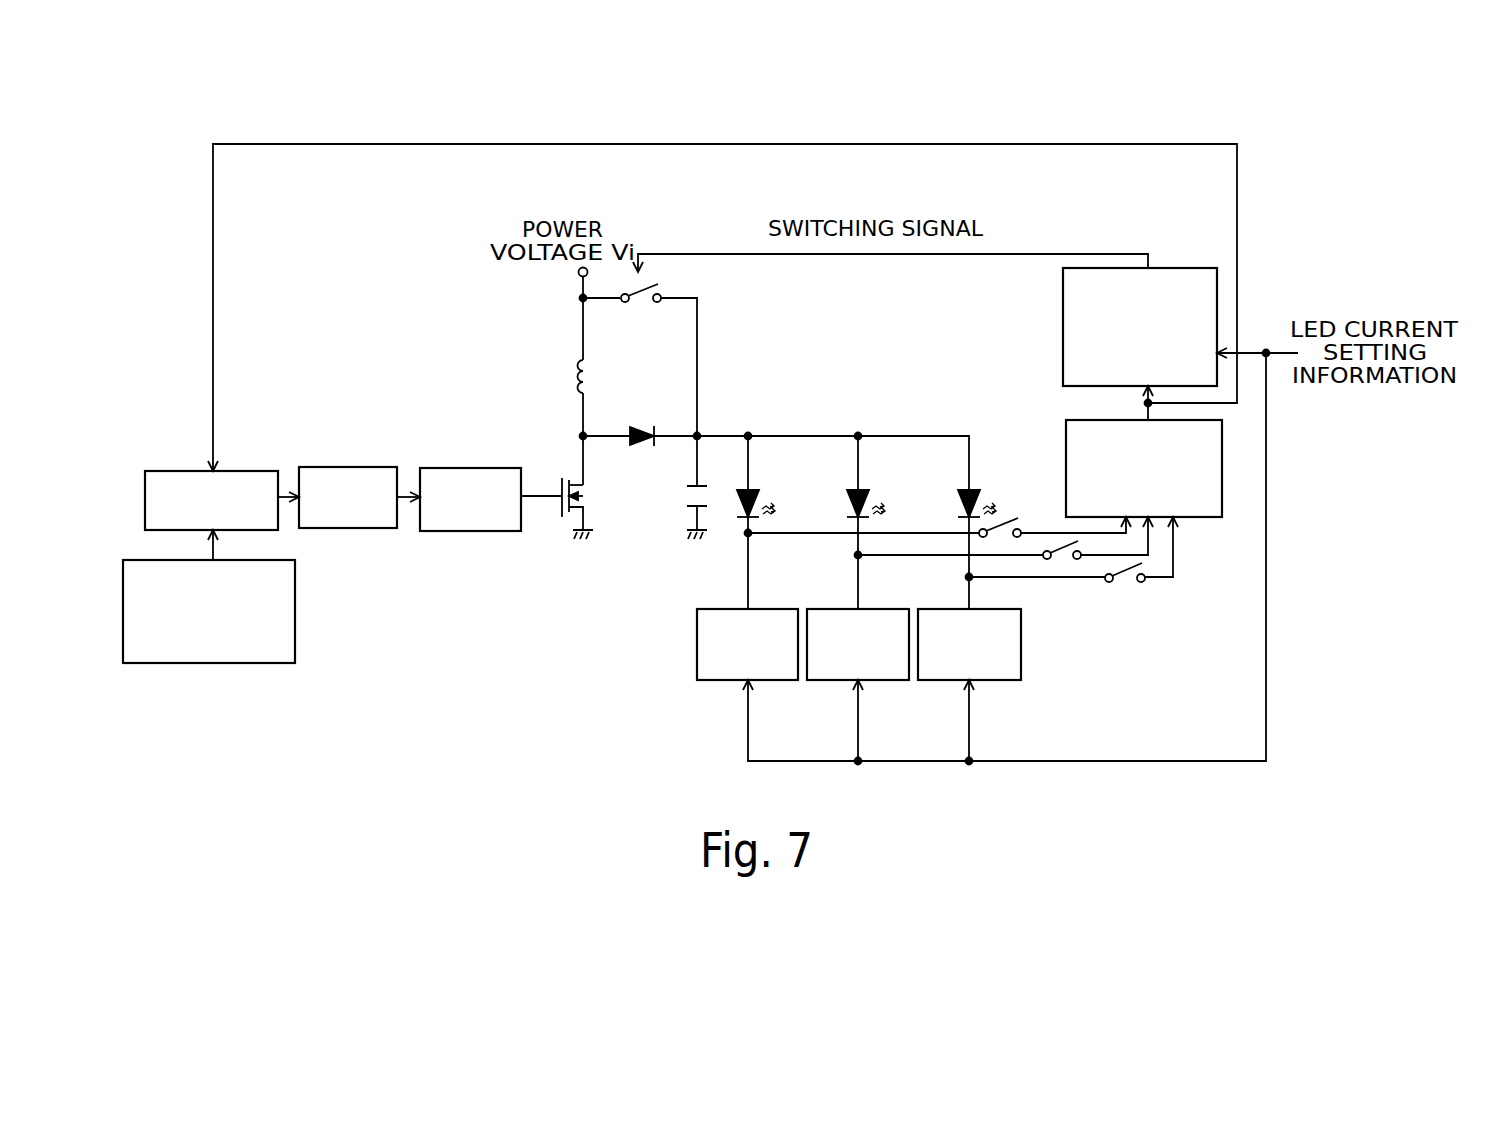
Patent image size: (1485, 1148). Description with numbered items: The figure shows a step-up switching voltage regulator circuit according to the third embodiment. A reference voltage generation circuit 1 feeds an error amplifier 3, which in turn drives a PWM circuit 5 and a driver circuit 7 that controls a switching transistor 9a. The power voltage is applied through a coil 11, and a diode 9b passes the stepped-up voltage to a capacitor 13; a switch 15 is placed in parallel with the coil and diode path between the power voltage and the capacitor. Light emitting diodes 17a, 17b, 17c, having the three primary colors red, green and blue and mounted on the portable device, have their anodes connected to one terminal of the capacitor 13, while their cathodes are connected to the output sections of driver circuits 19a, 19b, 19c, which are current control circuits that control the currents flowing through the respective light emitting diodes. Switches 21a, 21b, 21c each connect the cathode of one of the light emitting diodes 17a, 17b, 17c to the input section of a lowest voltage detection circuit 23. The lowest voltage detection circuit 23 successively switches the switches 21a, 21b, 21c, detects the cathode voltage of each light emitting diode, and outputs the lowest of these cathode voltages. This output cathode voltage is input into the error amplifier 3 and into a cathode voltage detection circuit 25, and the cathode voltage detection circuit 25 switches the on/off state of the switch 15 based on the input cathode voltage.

The reference voltage generation circuit 1 is at (296, 600).
The error amplifier 3 is at (233, 471).
The PWM circuit 5 is at (357, 467).
The driver circuit 7 is at (443, 531).
The switching transistor 9a is at (562, 515).
The diode 9b is at (633, 423).
The coil 11 is at (570, 373).
The capacitor 13 is at (687, 508).
The switch 15 is at (657, 303).
The light emitting diode 17a is at (757, 490).
The light emitting diode 17b is at (867, 490).
The light emitting diode 17c is at (978, 490).
The driver circuit 19a is at (717, 680).
The driver circuit 19b is at (847, 680).
The driver circuit 19c is at (980, 680).
The switch 21a is at (1007, 520).
The switch 21b is at (1067, 542).
The switch 21c is at (1122, 567).
The lowest voltage detection circuit 23 is at (1222, 470).
The cathode voltage detection circuit 25 is at (1173, 268).